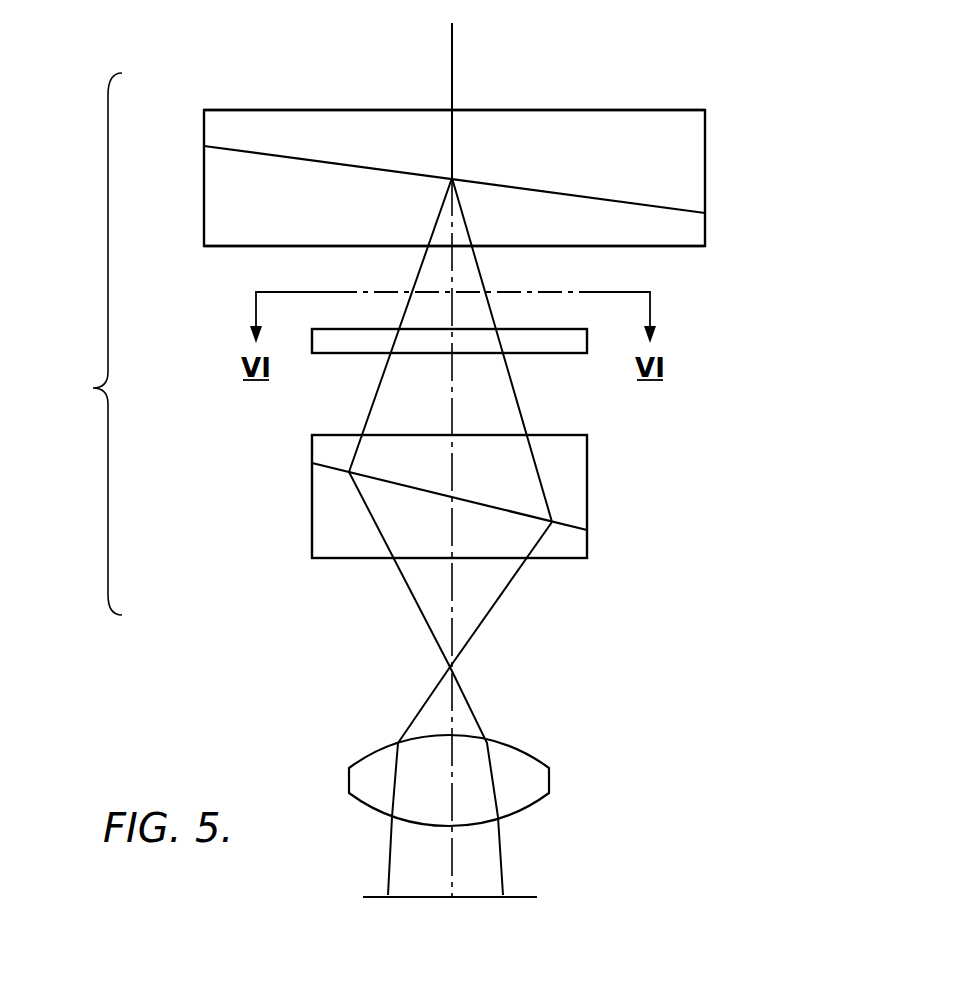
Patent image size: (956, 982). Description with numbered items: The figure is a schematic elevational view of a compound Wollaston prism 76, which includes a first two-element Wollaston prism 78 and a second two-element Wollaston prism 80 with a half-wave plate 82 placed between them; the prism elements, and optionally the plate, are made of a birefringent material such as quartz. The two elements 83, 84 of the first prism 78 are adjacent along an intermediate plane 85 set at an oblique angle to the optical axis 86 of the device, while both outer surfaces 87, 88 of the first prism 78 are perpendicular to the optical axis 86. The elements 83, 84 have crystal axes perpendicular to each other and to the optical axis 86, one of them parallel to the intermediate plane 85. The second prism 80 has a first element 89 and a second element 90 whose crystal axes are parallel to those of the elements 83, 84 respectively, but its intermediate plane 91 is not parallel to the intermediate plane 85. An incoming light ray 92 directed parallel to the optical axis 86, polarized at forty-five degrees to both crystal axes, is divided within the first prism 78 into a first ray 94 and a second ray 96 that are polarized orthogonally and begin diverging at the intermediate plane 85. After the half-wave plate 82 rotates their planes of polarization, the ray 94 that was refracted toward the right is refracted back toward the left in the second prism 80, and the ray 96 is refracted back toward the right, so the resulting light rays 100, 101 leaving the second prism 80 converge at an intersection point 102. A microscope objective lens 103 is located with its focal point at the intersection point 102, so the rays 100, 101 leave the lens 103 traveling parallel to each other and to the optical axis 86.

The compound Wollaston prism 76 is at (433, 317).
The first two-element Wollaston prism 78 is at (497, 167).
The second two-element Wollaston prism 80 is at (441, 521).
The half-wave plate 82 is at (542, 358).
The first element of first prism 83 is at (512, 148).
The second element of first prism 84 is at (280, 205).
The intermediate plane 85 is at (647, 202).
The optical axis 86 is at (450, 405).
The outer surface of first prism 87 is at (356, 106).
The outer surface of first prism 88 is at (667, 250).
The first element of second prism 89 is at (556, 459).
The second element of second prism 90 is at (334, 507).
The intermediate plane of second prism 91 is at (503, 507).
The incoming light ray 92 is at (450, 47).
The first ray 94 is at (482, 275).
The second ray 96 is at (418, 270).
The light ray leaving second prism 100 is at (508, 595).
The light ray leaving second prism 101 is at (403, 582).
The intersection point 102 is at (455, 667).
The microscope objective lens 103 is at (517, 813).